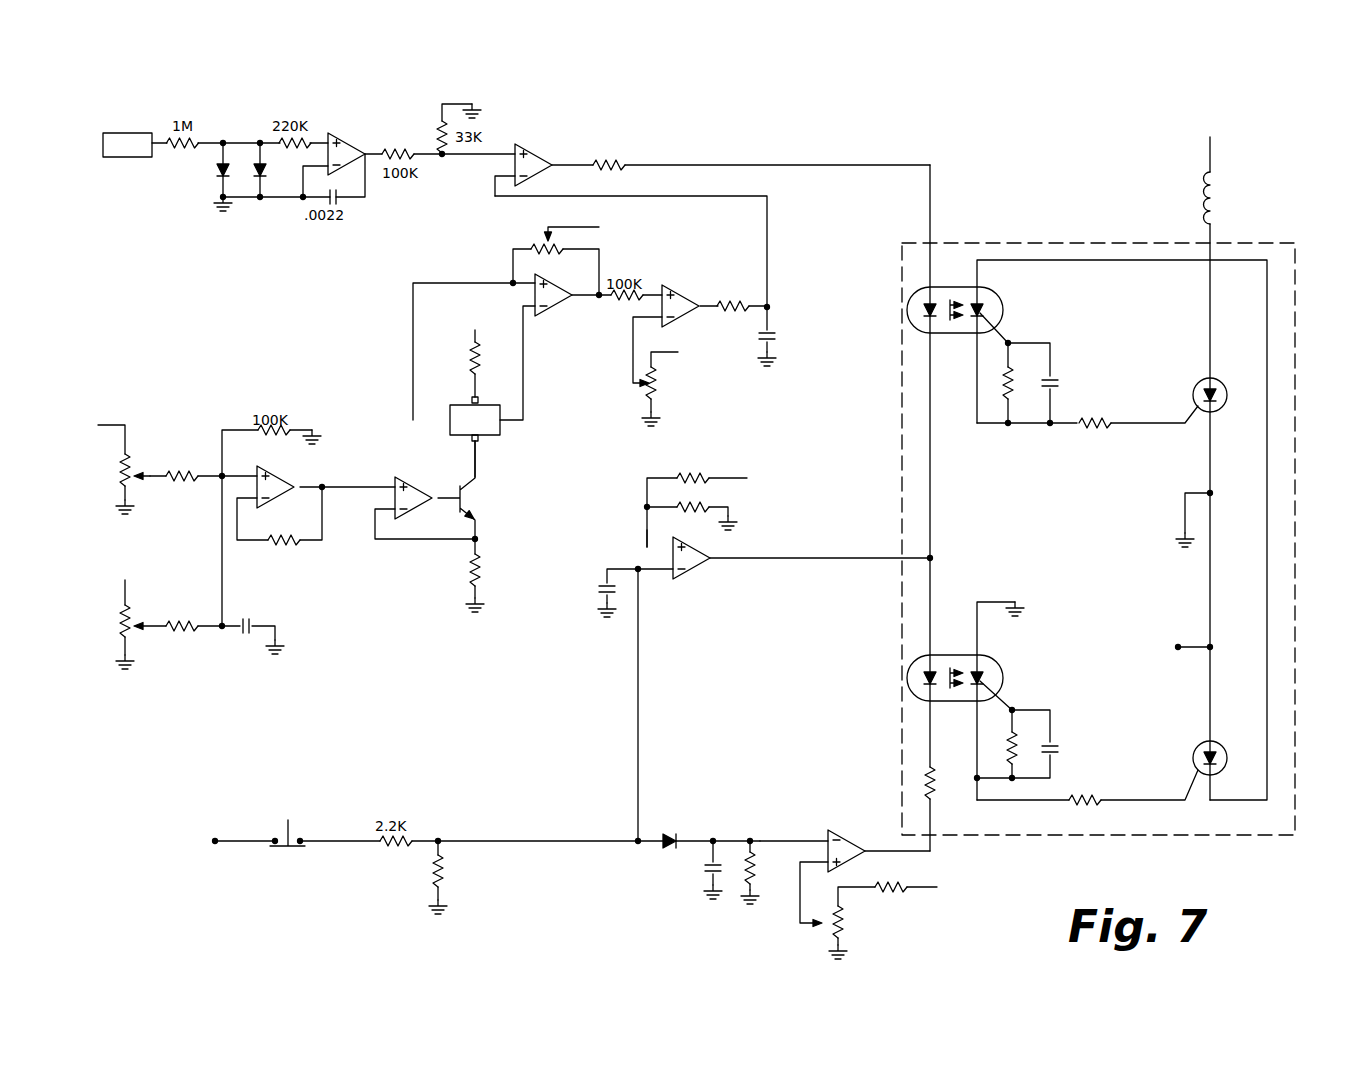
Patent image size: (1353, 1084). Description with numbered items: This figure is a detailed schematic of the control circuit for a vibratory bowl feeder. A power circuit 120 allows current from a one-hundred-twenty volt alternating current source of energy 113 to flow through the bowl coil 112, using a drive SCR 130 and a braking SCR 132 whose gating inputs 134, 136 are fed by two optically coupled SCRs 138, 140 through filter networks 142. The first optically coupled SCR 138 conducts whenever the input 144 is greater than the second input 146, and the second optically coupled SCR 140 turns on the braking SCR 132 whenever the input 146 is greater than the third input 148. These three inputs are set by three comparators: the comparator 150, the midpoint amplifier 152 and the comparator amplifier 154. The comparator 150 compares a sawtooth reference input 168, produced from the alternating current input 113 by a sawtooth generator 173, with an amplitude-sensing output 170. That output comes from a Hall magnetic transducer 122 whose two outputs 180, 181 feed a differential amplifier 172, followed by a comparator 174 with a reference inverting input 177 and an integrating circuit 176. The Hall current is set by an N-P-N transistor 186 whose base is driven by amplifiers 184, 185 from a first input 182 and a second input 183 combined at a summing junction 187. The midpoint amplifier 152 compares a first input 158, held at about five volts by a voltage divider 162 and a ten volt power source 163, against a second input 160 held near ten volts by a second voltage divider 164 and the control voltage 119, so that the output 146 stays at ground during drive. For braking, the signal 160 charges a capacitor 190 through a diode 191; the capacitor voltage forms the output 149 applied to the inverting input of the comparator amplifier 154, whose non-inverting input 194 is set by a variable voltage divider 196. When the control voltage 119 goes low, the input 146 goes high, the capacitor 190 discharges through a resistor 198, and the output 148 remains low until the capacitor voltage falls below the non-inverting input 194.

The bowl coil 112 is at (1217, 201).
The source of energy 113 is at (138, 158).
The control voltage 119 is at (215, 840).
The power circuit 120 is at (1297, 558).
The Hall magnetic transducer 122 is at (503, 431).
The drive SCR 130 is at (1219, 383).
The braking SCR 132 is at (1196, 752).
The gating input 134 is at (1160, 425).
The gating input 136 is at (1156, 799).
The optically coupled SCR 138 is at (998, 307).
The optically coupled SCR 140 is at (998, 674).
The RC network 142 is at (1009, 430).
The input to the power circuit 144 is at (931, 211).
The input to the power circuit 146 is at (791, 561).
The output of the braking circuit 148 is at (935, 850).
The output of the capacitor 149 is at (775, 840).
The comparator 150 is at (534, 154).
The midpoint amplifier 152 is at (695, 573).
The comparator amplifier 154 is at (846, 832).
The first input 158 is at (647, 533).
The second input 160 is at (638, 674).
The voltage divider 162 is at (665, 473).
The 10 volt power source 163 is at (768, 464).
The second voltage divider 164 is at (441, 822).
The input to the comparator 168 is at (495, 148).
The output 170 is at (768, 265).
The differential amplifier 172 is at (542, 308).
The sawtooth generator 173 is at (360, 138).
The comparator 174 is at (668, 294).
The integrating circuit 176 is at (786, 298).
The reference inverting input 177 is at (633, 351).
The output 180 is at (460, 282).
The output 181 is at (525, 335).
The first input 182 is at (149, 466).
The second input 183 is at (222, 578).
The amplifier 184 is at (296, 478).
The amplifier 185 is at (410, 476).
The N-P-N transistor 186 is at (486, 499).
The summing junction 187 is at (218, 480).
The capacitor 190 is at (705, 882).
The diode 191 is at (665, 832).
The non-inverting input 194 is at (799, 915).
The variable voltage divider 196 is at (828, 933).
The resistor 198 is at (758, 872).